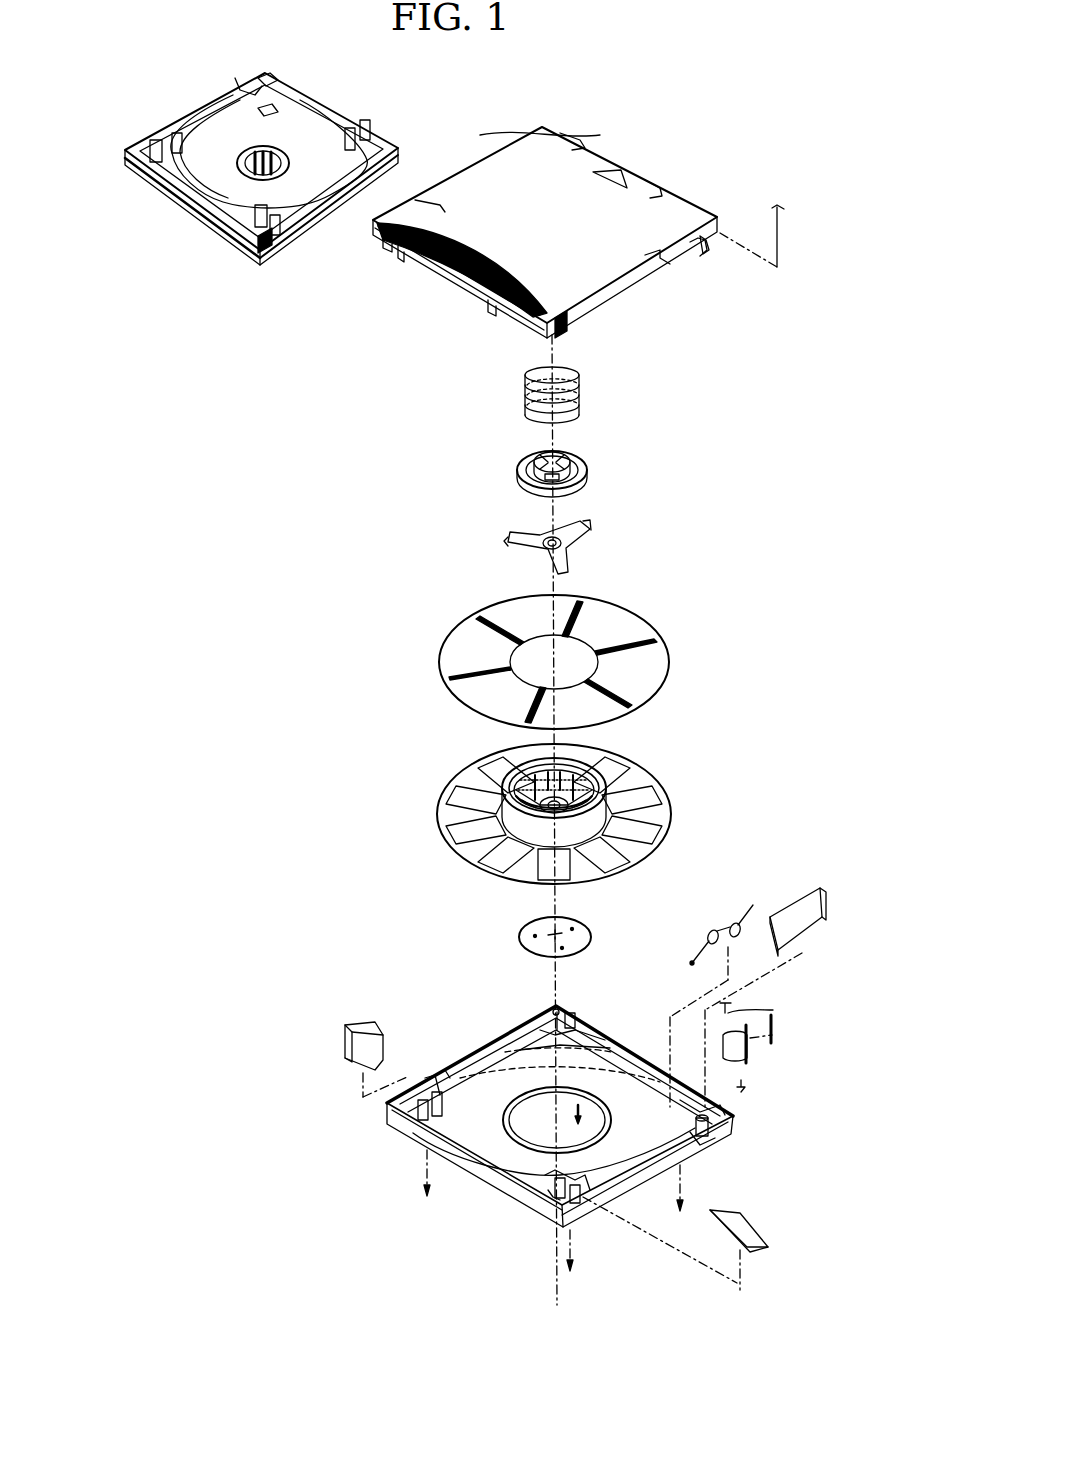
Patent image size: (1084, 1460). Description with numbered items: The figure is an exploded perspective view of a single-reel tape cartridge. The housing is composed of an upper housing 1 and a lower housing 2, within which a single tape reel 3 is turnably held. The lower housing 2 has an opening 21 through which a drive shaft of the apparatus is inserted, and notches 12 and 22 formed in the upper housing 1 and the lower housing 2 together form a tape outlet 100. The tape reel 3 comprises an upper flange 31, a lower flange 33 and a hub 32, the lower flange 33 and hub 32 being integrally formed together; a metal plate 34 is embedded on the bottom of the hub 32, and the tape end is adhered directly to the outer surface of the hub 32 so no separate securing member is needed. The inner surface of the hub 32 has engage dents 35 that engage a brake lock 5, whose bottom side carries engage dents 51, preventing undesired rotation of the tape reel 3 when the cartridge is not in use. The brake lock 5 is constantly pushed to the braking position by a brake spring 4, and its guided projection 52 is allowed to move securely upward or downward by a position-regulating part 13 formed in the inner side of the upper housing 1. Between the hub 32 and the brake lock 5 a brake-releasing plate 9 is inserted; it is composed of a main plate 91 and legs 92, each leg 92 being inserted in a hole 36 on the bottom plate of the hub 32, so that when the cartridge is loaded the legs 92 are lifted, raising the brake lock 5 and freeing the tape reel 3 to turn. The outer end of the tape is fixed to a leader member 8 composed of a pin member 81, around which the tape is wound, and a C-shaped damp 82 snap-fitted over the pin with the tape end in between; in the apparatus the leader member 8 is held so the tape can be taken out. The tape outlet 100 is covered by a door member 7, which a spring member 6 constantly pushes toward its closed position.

The upper housing 1 is at (373, 133).
The notch 12 is at (245, 82).
The position-regulating part 13 is at (237, 162).
The lower housing 2 is at (558, 1148).
The opening 21 is at (540, 1132).
The notch 22 is at (707, 1140).
The tape reel 3 is at (519, 739).
The upper flange 31 is at (452, 643).
The hub 32 is at (548, 783).
The lower flange 33 is at (455, 820).
The metal plate 34 is at (522, 938).
The engage dents 35 is at (605, 783).
The hole 36 is at (590, 788).
The brake spring 4 is at (527, 382).
The brake lock 5 is at (552, 463).
The engage dents 51 is at (582, 483).
The guided projection 52 is at (570, 458).
The brake-releasing plate 9 is at (542, 524).
The main plate 91 is at (587, 540).
The legs 92 is at (507, 553).
The spring member 6 is at (717, 932).
The door member 7 is at (803, 913).
The leader member 8 is at (778, 1036).
The pin member 81 is at (750, 1055).
The C-shaped damp 82 is at (775, 1032).
The tape outlet 100 is at (848, 910).